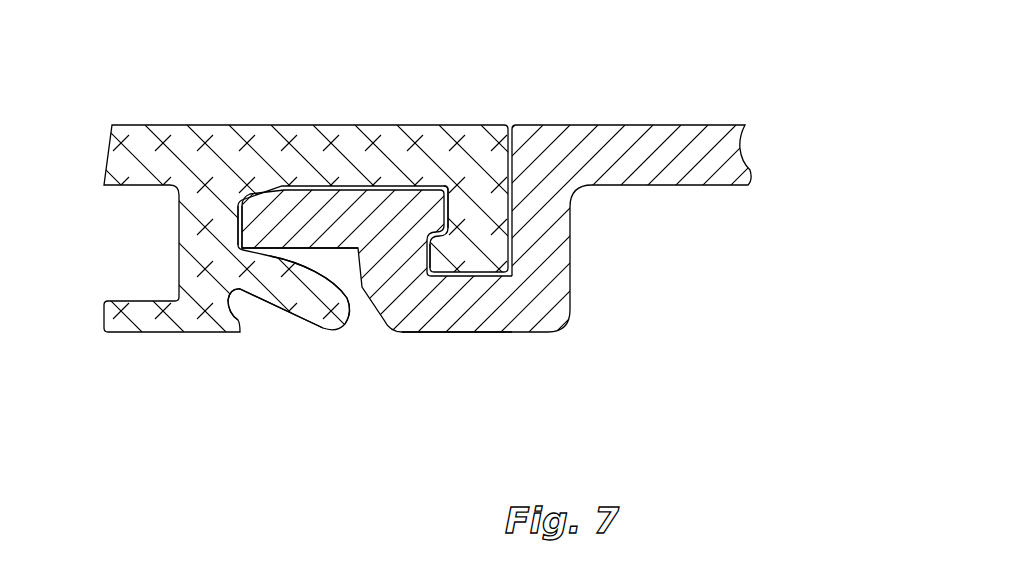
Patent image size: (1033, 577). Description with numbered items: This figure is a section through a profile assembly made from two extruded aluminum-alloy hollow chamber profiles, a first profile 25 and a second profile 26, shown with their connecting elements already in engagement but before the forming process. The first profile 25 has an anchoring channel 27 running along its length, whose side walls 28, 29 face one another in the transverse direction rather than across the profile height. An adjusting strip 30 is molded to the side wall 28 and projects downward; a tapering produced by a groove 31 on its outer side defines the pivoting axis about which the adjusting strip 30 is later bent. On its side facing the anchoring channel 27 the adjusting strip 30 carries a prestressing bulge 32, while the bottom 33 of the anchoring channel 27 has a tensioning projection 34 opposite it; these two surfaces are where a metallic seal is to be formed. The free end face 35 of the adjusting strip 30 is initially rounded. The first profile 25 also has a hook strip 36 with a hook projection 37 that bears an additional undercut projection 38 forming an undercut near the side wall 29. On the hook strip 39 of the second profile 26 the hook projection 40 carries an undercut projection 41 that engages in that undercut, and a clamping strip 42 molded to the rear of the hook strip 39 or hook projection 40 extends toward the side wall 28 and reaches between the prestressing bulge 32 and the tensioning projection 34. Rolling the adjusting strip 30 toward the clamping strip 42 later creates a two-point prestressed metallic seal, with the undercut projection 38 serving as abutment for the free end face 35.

The first profile 25 is at (176, 124).
The second profile 26 is at (648, 124).
The anchoring channel 27 is at (443, 189).
The side wall 28 is at (242, 228).
The side wall 29 is at (433, 207).
The adjusting strip 30 is at (303, 322).
The groove 31 is at (240, 298).
The prestressing bulge 32 is at (282, 258).
The bottom 33 is at (309, 188).
The tensioning projection 34 is at (265, 186).
The free end face 35 is at (347, 323).
The hook strip 36 is at (400, 124).
The hook projection 37 is at (471, 242).
The undercut projection 38 is at (443, 263).
The hook strip 39 is at (502, 337).
The hook projection 40 is at (388, 273).
The undercut projection 41 is at (434, 218).
The clamping strip 42 is at (350, 229).